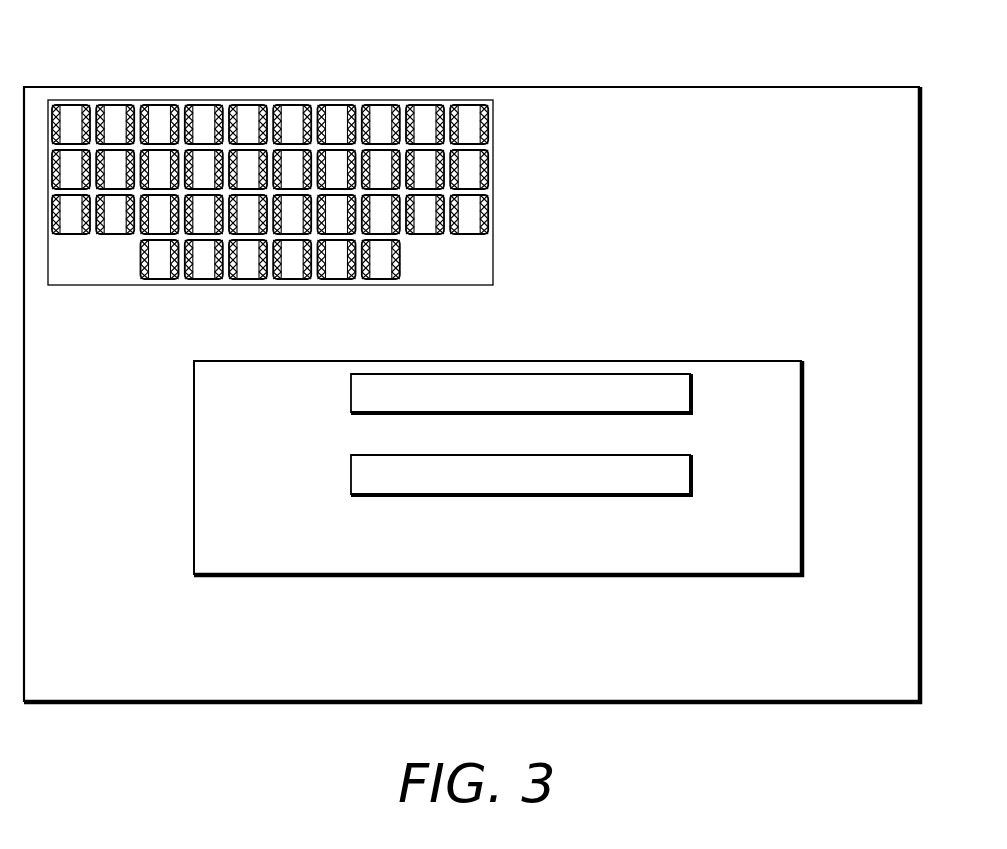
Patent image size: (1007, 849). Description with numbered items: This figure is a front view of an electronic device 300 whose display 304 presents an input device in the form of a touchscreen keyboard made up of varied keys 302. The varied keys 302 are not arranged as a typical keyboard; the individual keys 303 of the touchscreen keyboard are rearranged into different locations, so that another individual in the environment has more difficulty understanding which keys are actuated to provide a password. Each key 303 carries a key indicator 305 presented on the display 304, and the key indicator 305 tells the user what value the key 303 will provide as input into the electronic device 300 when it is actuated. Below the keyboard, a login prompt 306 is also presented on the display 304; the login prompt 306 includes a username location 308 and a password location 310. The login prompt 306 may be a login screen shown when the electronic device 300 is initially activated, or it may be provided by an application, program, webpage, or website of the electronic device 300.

The electronic device 300 is at (472, 354).
The varied keys 302 is at (270, 180).
The key 303 is at (160, 279).
The display 304 is at (778, 105).
The key indicator 305 is at (161, 103).
The login prompt 306 is at (498, 439).
The username location 308 is at (692, 392).
The password location 310 is at (692, 474).